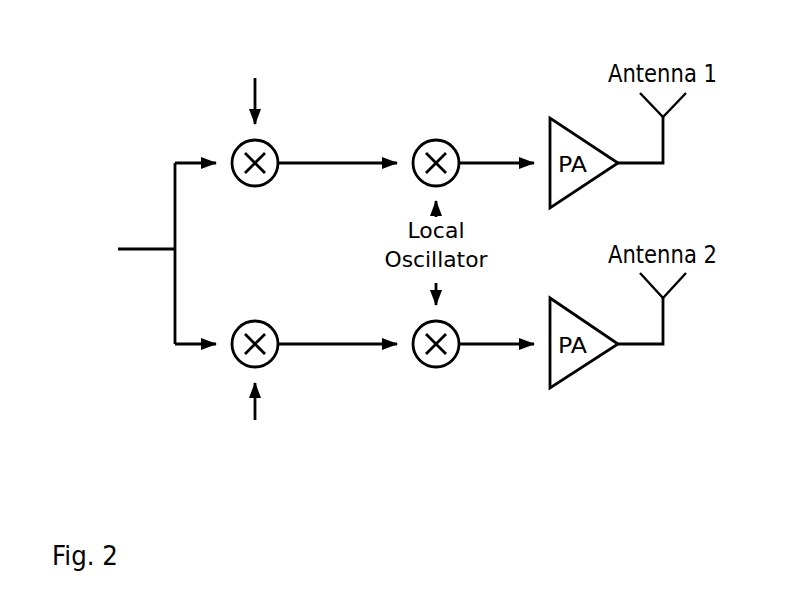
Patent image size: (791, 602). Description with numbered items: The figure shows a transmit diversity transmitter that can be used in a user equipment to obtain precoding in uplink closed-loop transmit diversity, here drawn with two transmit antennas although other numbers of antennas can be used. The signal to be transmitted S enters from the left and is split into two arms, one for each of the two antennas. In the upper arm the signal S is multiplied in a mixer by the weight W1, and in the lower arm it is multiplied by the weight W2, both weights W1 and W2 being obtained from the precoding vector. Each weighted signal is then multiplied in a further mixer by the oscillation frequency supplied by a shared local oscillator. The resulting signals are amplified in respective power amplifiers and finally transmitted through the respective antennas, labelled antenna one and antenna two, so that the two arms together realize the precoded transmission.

The signal to be transmitted S is at (148, 253).
The weight W1 is at (254, 73).
The weight W2 is at (254, 421).